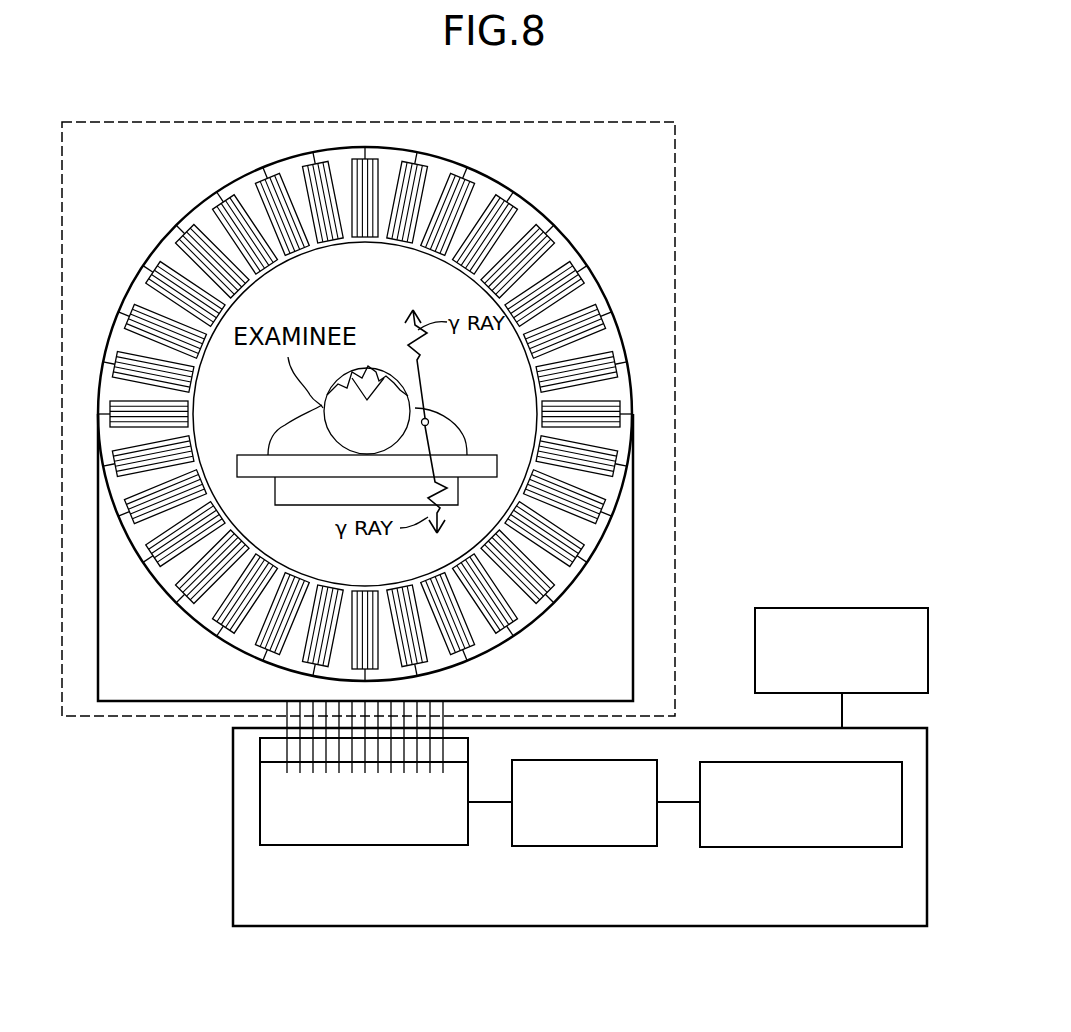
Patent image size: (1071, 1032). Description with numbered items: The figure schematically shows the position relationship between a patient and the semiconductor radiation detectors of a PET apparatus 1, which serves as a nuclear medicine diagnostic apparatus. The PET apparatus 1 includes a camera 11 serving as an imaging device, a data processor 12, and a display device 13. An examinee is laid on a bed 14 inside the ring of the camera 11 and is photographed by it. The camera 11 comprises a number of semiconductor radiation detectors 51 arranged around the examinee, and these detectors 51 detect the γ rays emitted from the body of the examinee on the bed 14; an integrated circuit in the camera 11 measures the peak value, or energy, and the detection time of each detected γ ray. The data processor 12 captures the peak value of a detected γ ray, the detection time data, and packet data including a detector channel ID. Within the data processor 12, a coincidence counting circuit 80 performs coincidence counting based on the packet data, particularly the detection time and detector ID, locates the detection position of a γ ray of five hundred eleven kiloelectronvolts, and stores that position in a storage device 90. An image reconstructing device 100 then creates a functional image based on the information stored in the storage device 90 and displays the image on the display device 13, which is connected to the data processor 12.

The PET apparatus 1 is at (690, 182).
The camera 11 is at (677, 290).
The data processor 12 is at (284, 927).
The display device 13 is at (841, 607).
The bed 14 is at (255, 455).
The semiconductor radiation detector 51 is at (562, 252).
The coincidence counting circuit 80 is at (260, 803).
The storage device 90 is at (586, 847).
The image reconstructing device 100 is at (806, 847).